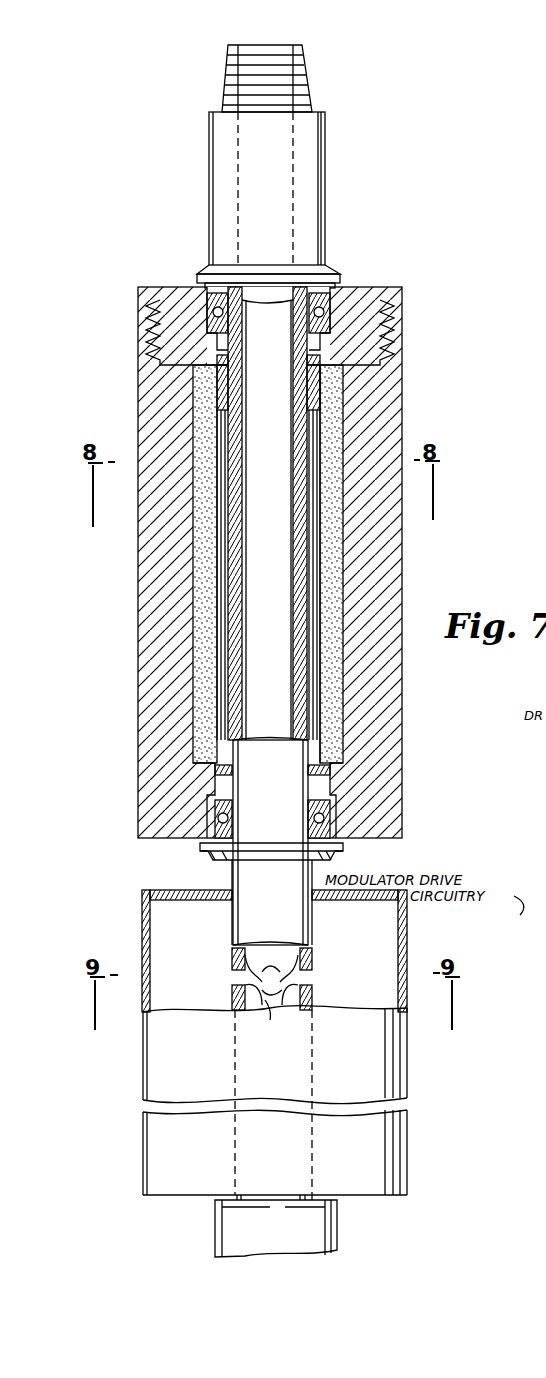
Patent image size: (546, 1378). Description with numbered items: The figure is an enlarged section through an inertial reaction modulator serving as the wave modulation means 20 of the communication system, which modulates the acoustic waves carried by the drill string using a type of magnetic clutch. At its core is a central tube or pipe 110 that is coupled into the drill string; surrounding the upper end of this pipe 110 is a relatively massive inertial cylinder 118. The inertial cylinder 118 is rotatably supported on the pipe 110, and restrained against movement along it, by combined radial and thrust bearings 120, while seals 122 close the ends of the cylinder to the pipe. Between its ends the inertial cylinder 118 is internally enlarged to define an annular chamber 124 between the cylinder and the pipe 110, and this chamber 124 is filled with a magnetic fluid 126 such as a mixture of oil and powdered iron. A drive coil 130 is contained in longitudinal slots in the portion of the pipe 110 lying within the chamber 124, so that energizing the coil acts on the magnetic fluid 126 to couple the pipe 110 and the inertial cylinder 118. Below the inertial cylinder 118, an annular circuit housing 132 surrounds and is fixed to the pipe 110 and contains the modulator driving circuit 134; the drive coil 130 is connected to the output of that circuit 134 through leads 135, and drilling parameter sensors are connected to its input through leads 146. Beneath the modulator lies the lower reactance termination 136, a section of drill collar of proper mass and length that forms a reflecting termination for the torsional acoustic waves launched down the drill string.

The wave modulation means 20 is at (263, 652).
The central tube or pipe 110 is at (300, 783).
The inertial cylinder 118 is at (402, 560).
The combined radial and thrust bearings 120 is at (333, 300).
The seals 122 is at (225, 364).
The annular chamber 124 is at (332, 680).
The magnetic fluid 126 is at (205, 628).
The drive coil 130 is at (222, 567).
The annular circuit housing 132 is at (407, 1073).
The modulator driving circuit 134 is at (400, 918).
The leads 135 is at (272, 976).
The lower reactance termination 136 is at (216, 1243).
The leads 146 is at (272, 1008).